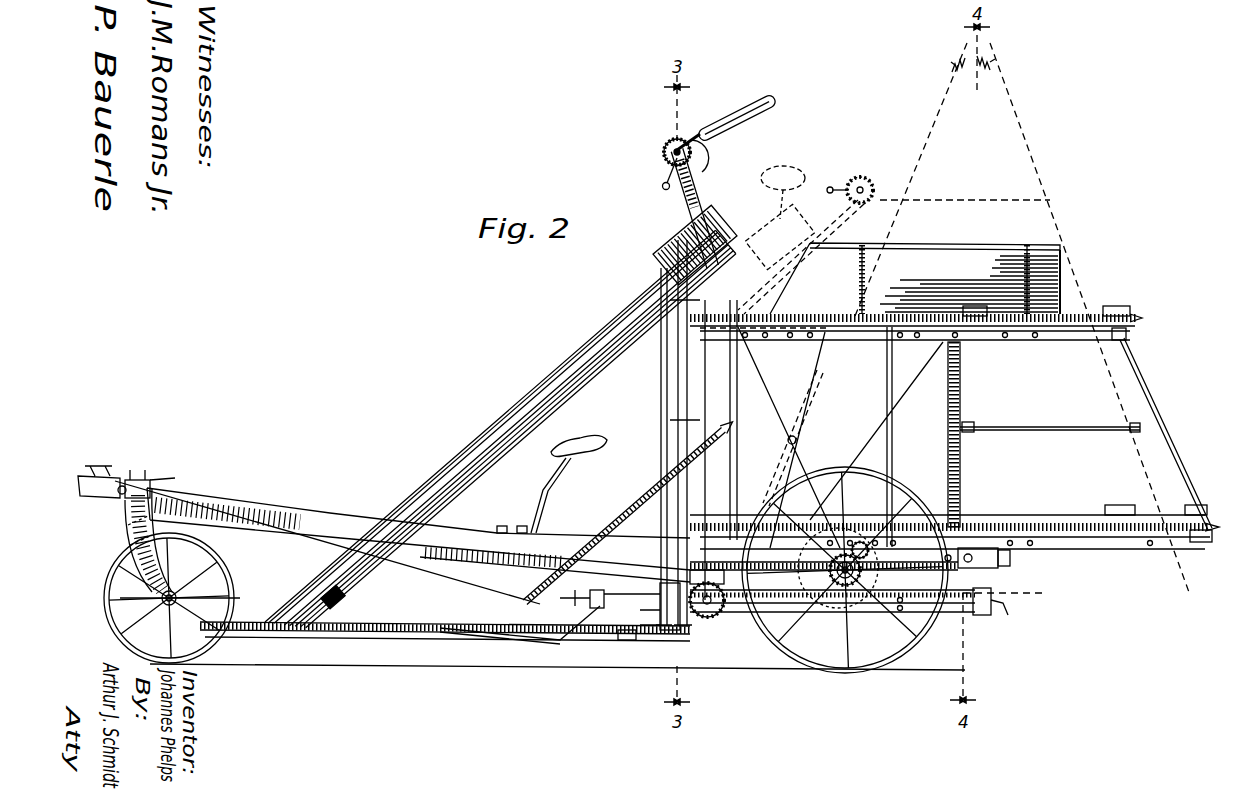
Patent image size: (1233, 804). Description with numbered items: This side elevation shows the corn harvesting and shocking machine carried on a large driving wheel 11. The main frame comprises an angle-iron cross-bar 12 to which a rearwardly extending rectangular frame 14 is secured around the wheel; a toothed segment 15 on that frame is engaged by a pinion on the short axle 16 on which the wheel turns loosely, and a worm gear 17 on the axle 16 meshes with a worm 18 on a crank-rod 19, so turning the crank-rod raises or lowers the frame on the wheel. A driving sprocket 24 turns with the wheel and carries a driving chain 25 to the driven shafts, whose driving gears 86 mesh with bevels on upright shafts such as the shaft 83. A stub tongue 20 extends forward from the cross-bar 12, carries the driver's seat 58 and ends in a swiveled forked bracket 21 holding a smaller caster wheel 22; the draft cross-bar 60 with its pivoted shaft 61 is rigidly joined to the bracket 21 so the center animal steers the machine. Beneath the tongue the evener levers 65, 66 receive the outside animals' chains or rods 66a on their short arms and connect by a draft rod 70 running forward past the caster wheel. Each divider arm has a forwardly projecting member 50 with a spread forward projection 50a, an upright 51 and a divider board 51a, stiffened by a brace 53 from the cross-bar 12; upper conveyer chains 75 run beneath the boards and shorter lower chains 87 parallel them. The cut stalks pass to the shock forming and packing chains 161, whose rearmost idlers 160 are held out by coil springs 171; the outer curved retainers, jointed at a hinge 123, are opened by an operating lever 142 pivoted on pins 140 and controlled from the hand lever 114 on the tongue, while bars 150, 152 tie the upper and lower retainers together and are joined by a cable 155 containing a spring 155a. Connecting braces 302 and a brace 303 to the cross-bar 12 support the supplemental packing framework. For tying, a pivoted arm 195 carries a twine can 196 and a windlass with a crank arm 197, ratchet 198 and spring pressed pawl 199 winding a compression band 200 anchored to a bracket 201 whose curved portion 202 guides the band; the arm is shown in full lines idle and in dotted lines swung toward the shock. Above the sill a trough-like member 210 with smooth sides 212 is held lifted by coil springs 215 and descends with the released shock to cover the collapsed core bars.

The driving wheel 11 is at (900, 496).
The cross-bar 12 is at (712, 617).
The rectangular frame 14 is at (976, 614).
The toothed segment 15 is at (822, 505).
The axle 16 is at (878, 612).
The worm gear 17 is at (861, 573).
The worm 18 is at (858, 542).
The crank-rod 19 is at (1003, 605).
The stub tongue 20 is at (325, 514).
The bracket 21 is at (130, 540).
The caster wheel 22 is at (106, 630).
The driving sprocket 24 is at (832, 601).
The driving chain 25 is at (828, 614).
The forwardly projecting member 50 is at (385, 622).
The forward projection 50a is at (246, 632).
The upright 51 is at (678, 411).
The divider board 51a is at (541, 386).
The brace 53 is at (520, 594).
The driver's seat 58 is at (585, 455).
The cross-bar 60 is at (142, 488).
The shaft 61 is at (84, 474).
The lever 65 is at (652, 580).
The lever 66 is at (680, 630).
The chains or rods 66a is at (628, 632).
The draft rod 70 is at (415, 566).
The upper conveyer chain 75 is at (600, 362).
The vertical upright shaft 83 is at (708, 366).
The driving gear 86 is at (735, 618).
The lower supplementary chain 87 is at (602, 528).
The hand lever 114 is at (661, 356).
The hinged joint 123 is at (1000, 562).
The pin 140 is at (963, 566).
The operating lever 142 is at (934, 560).
The bar 150 is at (960, 378).
The bar 152 is at (1168, 460).
The cable 155 is at (1056, 427).
The spring 155a is at (968, 432).
The idler 160 is at (974, 306).
The shock forming and packing chain 161 is at (832, 317).
The coil spring 171 is at (1124, 340).
The arm 195 is at (706, 202).
The twine can 196 is at (655, 240).
The crank arm 197 is at (665, 174).
The ratchet 198 is at (666, 145).
The spring pressed pawl 199 is at (680, 203).
The compression band 200 is at (752, 110).
The bracket 201 is at (706, 150).
The curved portion 202 is at (965, 189).
The trough-like member 210 is at (962, 243).
The side 212 is at (1065, 266).
The coil spring 215 is at (868, 267).
The connecting brace 302 is at (796, 350).
The brace 303 is at (835, 188).